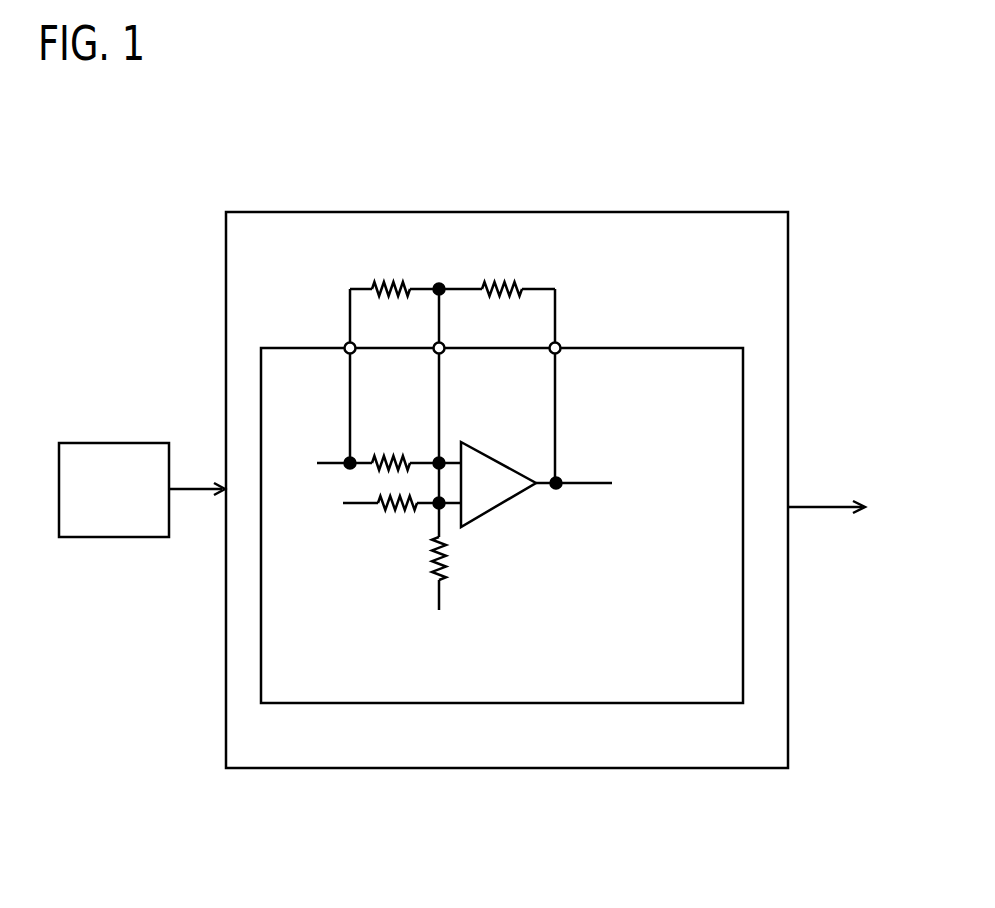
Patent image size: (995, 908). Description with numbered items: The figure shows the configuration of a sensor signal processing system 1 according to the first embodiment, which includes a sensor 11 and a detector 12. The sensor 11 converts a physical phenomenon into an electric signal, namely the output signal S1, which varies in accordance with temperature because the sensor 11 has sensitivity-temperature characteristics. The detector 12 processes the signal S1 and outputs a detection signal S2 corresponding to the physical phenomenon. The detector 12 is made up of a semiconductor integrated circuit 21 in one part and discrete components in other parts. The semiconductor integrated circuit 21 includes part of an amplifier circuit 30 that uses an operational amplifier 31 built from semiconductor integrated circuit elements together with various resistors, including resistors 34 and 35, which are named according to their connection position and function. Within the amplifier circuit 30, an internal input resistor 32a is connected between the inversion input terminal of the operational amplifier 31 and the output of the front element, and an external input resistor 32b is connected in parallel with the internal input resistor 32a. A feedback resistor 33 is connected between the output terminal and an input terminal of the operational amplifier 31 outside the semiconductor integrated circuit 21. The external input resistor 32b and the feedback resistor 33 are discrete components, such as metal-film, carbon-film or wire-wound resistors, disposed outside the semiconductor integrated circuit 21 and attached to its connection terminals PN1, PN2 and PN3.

The sensor signal processing system 1 is at (345, 119).
The sensor 11 is at (149, 443).
The detector 12 is at (658, 212).
The semiconductor integrated circuit 21 is at (656, 347).
The amplifier circuit 30 is at (380, 563).
The operational amplifier 31 is at (520, 490).
The internal input resistor 32a is at (390, 450).
The external input resistor 32b is at (398, 280).
The feedback resistor 33 is at (517, 280).
The resistor 34 is at (373, 513).
The resistor 35 is at (448, 562).
The connection terminal PN1 is at (346, 345).
The connection terminal PN2 is at (442, 352).
The connection terminal PN3 is at (558, 352).
The output signal S1 is at (190, 495).
The detection signal S2 is at (826, 488).